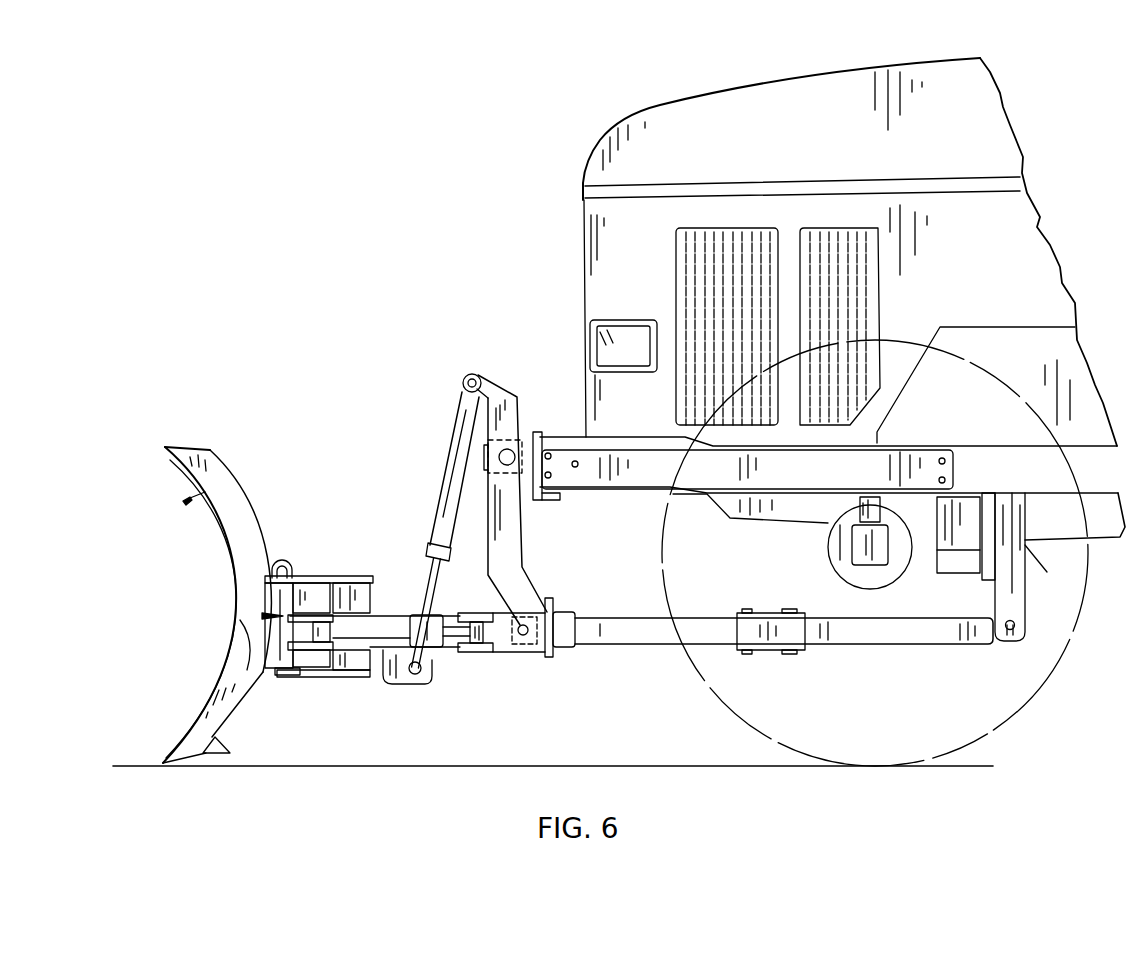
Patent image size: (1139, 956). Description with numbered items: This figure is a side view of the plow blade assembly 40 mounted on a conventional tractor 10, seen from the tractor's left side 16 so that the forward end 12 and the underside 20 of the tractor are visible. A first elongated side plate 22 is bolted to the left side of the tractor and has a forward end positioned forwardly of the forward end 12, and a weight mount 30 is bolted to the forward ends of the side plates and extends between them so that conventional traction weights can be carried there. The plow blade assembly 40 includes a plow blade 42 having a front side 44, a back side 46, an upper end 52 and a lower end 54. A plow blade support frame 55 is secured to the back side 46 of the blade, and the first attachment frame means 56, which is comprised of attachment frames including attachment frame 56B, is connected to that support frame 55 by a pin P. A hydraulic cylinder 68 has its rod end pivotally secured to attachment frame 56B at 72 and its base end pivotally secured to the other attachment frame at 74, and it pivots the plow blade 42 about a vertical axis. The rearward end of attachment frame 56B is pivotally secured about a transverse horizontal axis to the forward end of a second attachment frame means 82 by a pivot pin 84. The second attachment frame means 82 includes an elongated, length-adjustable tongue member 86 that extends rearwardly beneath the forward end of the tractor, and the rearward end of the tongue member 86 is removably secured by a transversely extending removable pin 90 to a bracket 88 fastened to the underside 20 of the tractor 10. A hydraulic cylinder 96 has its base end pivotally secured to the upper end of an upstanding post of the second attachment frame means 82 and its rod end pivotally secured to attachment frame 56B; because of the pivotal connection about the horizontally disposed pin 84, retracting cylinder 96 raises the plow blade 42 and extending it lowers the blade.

The tractor 10 is at (560, 160).
The forward end 12 is at (584, 236).
The left side 16 is at (998, 285).
The underside 20 is at (1085, 580).
The first elongated side plate 22 is at (888, 467).
The weight mount 30 is at (568, 425).
The plow blade assembly 40 is at (333, 495).
The plow blade 42 is at (183, 505).
The front side 44 is at (205, 643).
The back side 46 is at (255, 542).
The upper end 52 is at (178, 440).
The lower end 54 is at (200, 753).
The plow blade support frame 55 is at (262, 616).
The first attachment frame means 56 is at (443, 680).
The attachment frame 56B is at (300, 603).
The hydraulic cylinder 68 is at (382, 645).
The rod end pivot connection 72 is at (485, 612).
The base end pivot connection 74 is at (313, 632).
The second attachment frame means 82 is at (642, 600).
The pivot pin 84 is at (525, 647).
The tongue member 86 is at (838, 617).
The bracket 88 is at (1010, 604).
The removable pin 90 is at (1009, 631).
The hydraulic cylinder 96 is at (452, 462).
The pin P is at (290, 566).